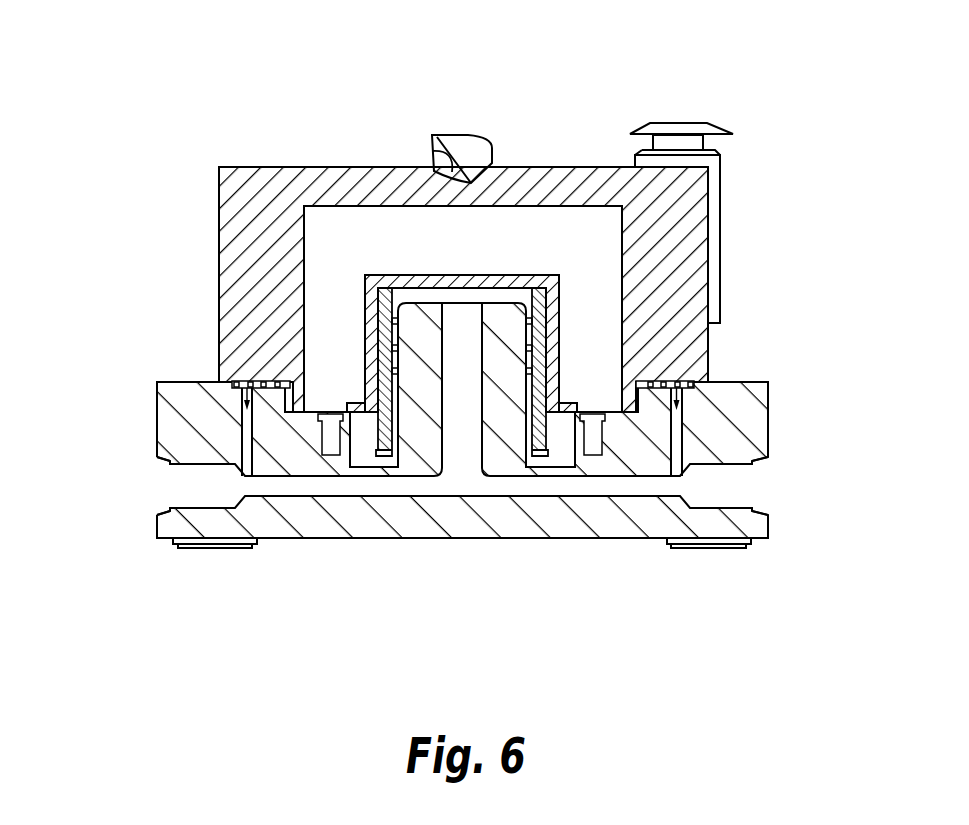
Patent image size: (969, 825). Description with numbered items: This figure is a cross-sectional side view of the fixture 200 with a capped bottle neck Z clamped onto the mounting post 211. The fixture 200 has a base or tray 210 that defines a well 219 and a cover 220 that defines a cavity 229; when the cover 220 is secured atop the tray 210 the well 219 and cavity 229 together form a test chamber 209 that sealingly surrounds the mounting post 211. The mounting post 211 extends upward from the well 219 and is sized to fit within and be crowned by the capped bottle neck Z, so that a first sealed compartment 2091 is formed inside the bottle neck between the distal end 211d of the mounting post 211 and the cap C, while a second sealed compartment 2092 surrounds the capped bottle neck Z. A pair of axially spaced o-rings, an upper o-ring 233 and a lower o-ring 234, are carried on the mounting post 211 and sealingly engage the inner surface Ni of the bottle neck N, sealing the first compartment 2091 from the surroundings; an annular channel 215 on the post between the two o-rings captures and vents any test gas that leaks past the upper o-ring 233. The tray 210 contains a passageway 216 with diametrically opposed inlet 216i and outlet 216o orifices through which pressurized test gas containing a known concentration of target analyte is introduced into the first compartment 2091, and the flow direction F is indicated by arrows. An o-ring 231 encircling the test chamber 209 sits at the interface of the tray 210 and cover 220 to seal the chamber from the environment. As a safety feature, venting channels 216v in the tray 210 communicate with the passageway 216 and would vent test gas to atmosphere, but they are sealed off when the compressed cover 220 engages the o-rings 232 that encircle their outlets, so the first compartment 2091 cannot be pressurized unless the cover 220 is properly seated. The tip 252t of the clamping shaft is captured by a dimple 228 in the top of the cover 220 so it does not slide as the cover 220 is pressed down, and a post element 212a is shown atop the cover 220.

The fixture 200 is at (177, 106).
The cavity 229 is at (320, 228).
The test chamber 209 is at (376, 229).
The dimple 228 is at (432, 150).
The tip of the shaft 252t is at (480, 152).
The distal end of the mounting post 211d is at (492, 300).
The actuator post 212a is at (712, 132).
The cover 220 is at (230, 182).
The second sealed compartment 2092 is at (320, 289).
The first sealed compartment 2091 is at (521, 286).
The capped bottle neck Z is at (366, 274).
The cap C is at (560, 278).
The lower o-ring 234 is at (397, 320).
The upper o-ring 233 is at (393, 372).
The venting channels 216v is at (246, 387).
The o-ring 231 is at (277, 383).
The o-rings 232 is at (228, 373).
The annular channel 215 is at (545, 352).
The bottle neck N is at (547, 387).
The tray 210 is at (762, 422).
The inlet orifice 216i is at (196, 489).
The outlet orifice 216o is at (712, 489).
The flow region F is at (377, 415).
The mounting post 211 is at (398, 405).
The inner surface of the bottle neck Ni is at (402, 440).
The passageway 216 is at (462, 473).
The well 219 is at (563, 465).